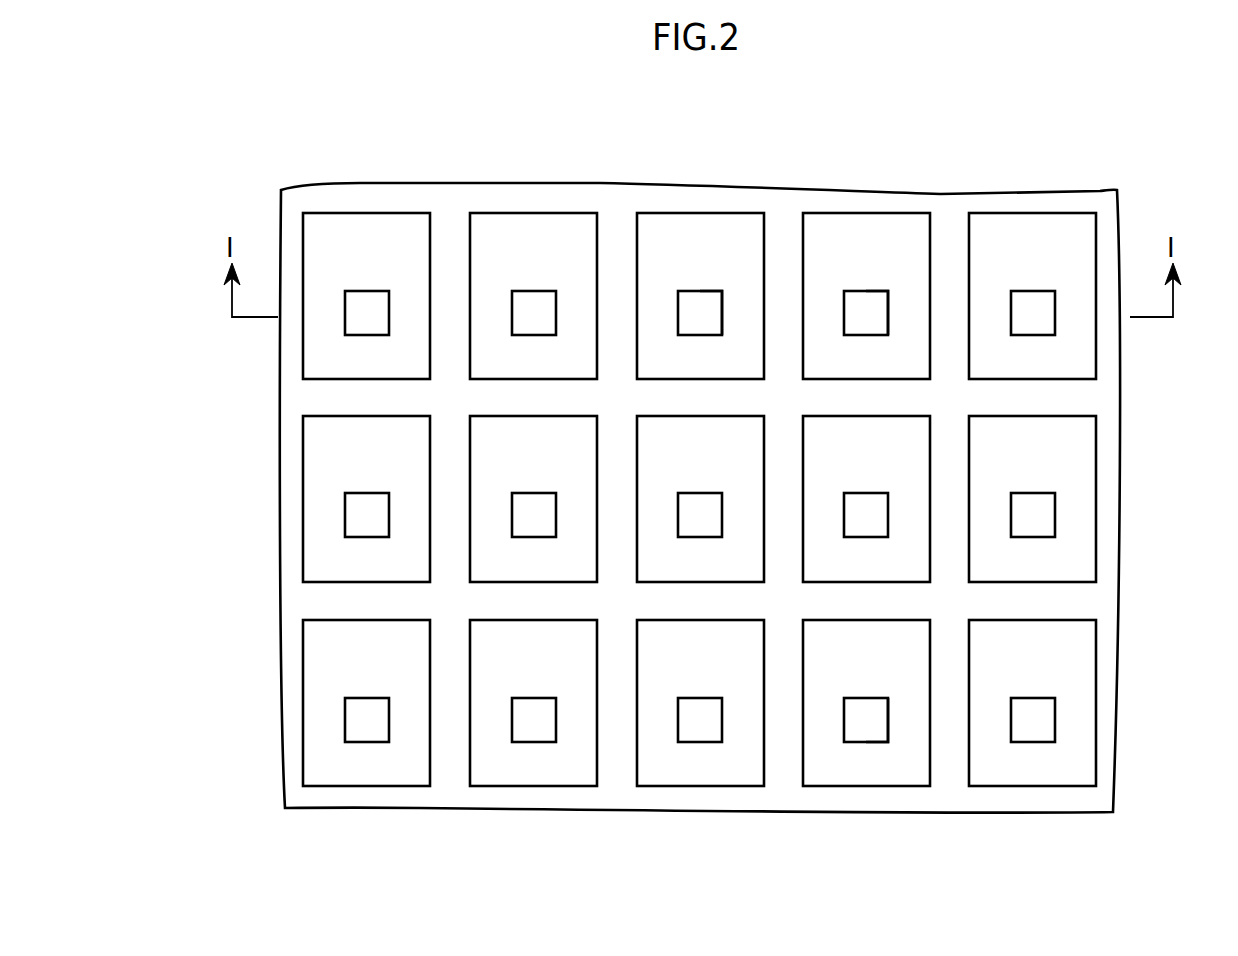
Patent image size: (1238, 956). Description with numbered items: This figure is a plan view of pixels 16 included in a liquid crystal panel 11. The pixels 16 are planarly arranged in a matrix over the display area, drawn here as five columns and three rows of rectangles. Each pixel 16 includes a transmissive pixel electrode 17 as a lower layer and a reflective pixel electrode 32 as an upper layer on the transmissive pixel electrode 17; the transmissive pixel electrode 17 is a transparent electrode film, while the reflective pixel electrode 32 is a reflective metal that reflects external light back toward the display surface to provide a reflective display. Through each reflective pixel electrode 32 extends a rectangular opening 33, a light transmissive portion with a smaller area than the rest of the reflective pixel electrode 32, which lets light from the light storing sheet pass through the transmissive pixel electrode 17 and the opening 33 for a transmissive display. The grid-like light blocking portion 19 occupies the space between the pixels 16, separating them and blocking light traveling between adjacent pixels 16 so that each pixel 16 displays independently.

The substrate 11 is at (1138, 180).
The pixel 16 is at (775, 506).
The transmissive pixel electrode 17 is at (700, 317).
The light blocking portion 19 is at (450, 242).
The reflective pixel electrode 32 is at (657, 303).
The opening 33 is at (718, 313).